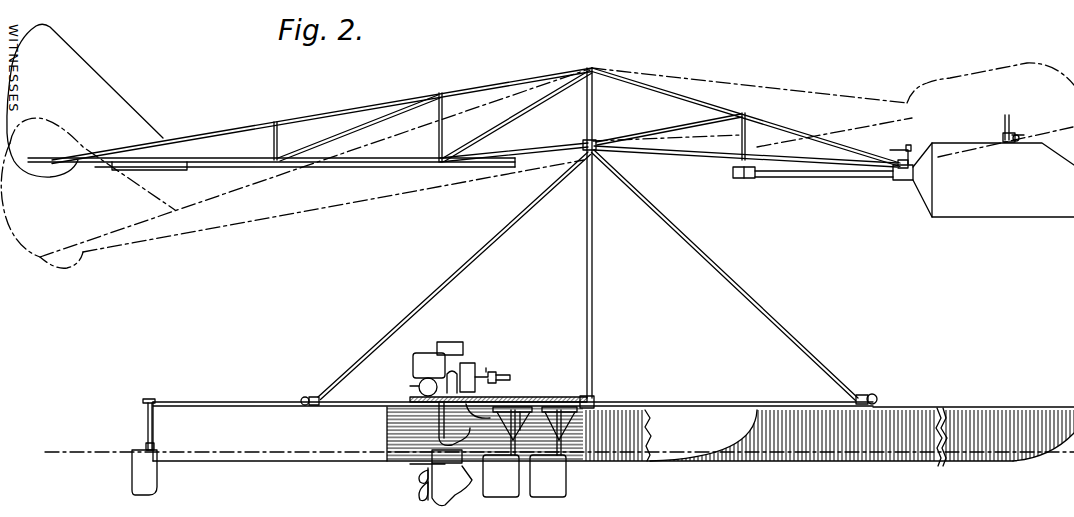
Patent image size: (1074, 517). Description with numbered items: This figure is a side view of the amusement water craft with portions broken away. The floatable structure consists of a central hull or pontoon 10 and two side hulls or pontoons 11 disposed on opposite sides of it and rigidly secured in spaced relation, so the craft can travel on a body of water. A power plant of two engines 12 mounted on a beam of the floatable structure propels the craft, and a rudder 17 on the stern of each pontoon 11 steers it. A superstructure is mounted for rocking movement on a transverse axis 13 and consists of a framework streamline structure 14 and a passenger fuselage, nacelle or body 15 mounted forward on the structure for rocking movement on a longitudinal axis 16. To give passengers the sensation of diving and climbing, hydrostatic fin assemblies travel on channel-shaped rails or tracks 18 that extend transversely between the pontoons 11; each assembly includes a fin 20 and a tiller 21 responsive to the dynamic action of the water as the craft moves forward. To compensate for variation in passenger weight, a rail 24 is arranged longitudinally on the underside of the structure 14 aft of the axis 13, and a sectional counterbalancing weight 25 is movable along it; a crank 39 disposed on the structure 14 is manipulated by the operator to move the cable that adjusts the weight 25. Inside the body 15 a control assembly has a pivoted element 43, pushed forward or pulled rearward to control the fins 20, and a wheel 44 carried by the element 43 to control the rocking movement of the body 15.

The central hull or pontoon 10 is at (807, 463).
The hull or pontoon 11 is at (337, 455).
The engine 12 is at (413, 364).
The transverse axis 13 is at (594, 140).
The framework streamline structure 14 is at (486, 86).
The passenger fuselage, nacelle or body 15 is at (978, 207).
The longitudinal axis 16 is at (811, 177).
The rudder 17 is at (140, 473).
The rail or track 18 is at (493, 405).
The fin 20 is at (493, 489).
The tiller 21 is at (520, 408).
The rail 24 is at (368, 168).
The counterbalancing weight 25 is at (173, 170).
The crank 39 is at (909, 148).
The pivoted element 43 is at (1014, 143).
The wheel 44 is at (1005, 116).